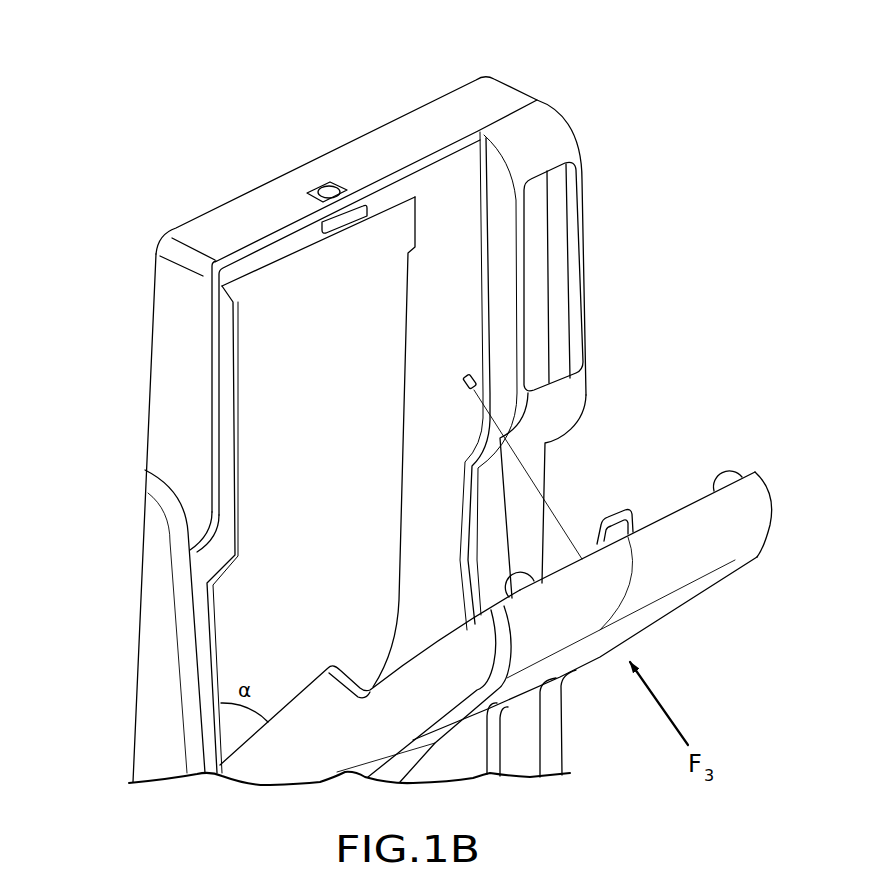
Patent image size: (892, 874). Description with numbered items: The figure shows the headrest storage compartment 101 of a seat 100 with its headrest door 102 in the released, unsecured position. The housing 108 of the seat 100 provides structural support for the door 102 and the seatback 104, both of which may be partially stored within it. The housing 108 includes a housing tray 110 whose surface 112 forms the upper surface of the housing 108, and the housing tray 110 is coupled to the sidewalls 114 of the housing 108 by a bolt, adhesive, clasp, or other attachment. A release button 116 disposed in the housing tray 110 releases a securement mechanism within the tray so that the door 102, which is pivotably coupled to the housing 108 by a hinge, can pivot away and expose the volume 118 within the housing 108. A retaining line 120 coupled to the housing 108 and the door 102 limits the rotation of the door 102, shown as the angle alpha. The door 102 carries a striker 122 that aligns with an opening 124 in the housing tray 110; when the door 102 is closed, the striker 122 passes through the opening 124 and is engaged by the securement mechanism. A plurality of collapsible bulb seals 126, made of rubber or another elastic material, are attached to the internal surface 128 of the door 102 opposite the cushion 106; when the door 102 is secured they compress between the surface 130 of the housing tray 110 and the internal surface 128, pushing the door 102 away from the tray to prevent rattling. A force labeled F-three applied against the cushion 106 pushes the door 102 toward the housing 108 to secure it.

The seat 100 is at (117, 226).
The headrest storage compartment 101 is at (500, 178).
The headrest door 102 is at (418, 686).
The seatback 104 is at (478, 757).
The cushion 106 is at (691, 570).
The housing 108 is at (148, 567).
The housing tray 110 is at (390, 127).
The surface 112 is at (486, 121).
The sidewalls 114 is at (201, 362).
The release button 116 is at (310, 187).
The volume 118 is at (332, 455).
The retaining line 120 is at (550, 481).
The striker 122 is at (636, 507).
The opening 124 is at (350, 220).
The collapsible bulb seals 126 is at (503, 590).
The internal surface 128 is at (696, 498).
The surface 130 is at (288, 240).